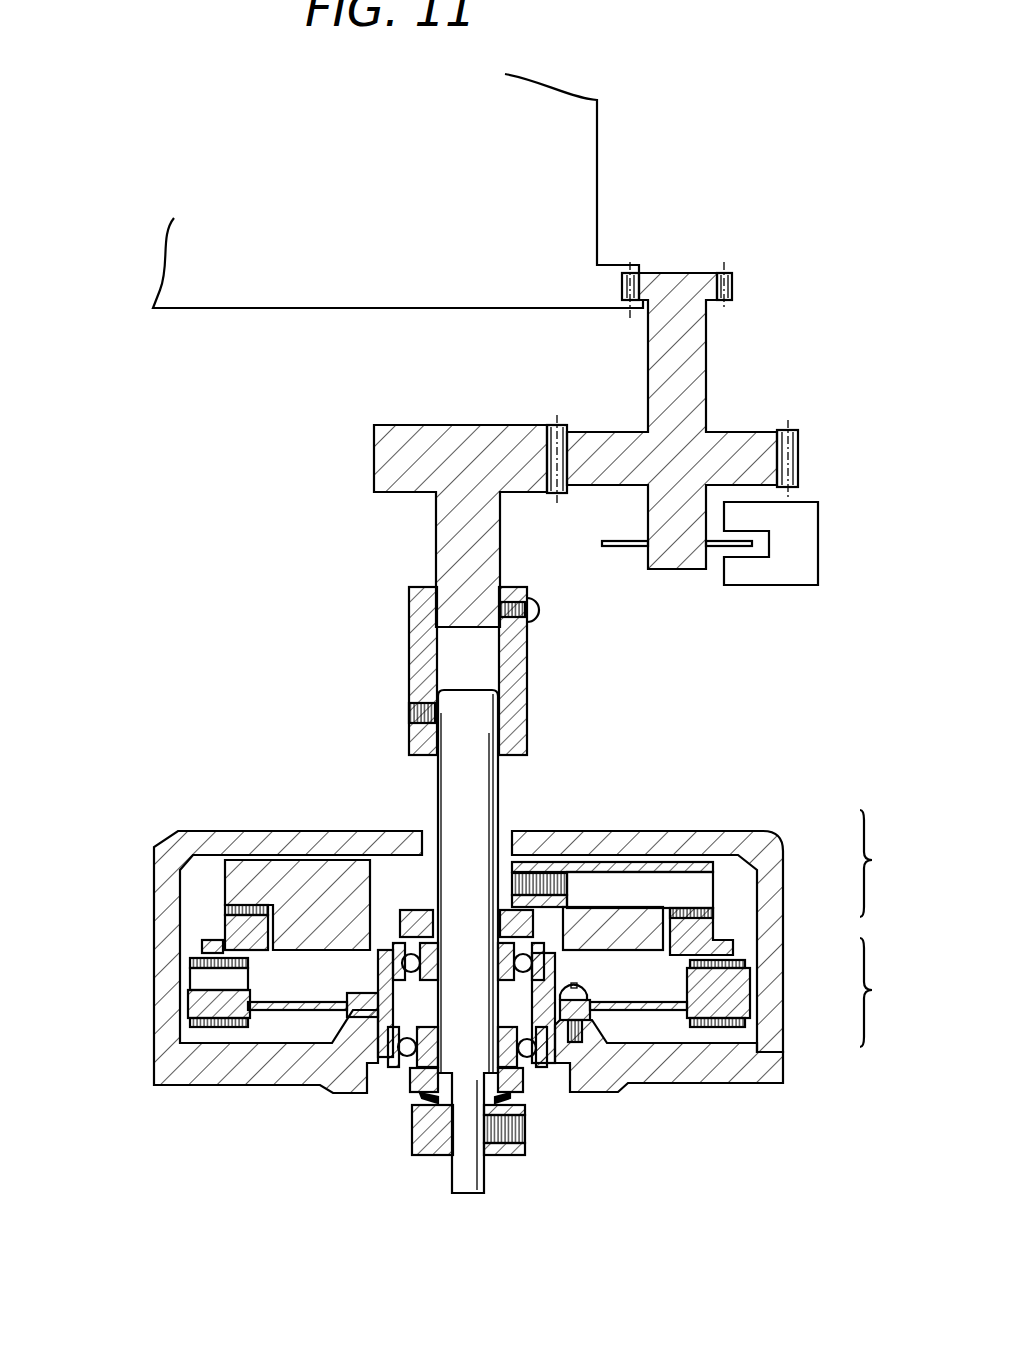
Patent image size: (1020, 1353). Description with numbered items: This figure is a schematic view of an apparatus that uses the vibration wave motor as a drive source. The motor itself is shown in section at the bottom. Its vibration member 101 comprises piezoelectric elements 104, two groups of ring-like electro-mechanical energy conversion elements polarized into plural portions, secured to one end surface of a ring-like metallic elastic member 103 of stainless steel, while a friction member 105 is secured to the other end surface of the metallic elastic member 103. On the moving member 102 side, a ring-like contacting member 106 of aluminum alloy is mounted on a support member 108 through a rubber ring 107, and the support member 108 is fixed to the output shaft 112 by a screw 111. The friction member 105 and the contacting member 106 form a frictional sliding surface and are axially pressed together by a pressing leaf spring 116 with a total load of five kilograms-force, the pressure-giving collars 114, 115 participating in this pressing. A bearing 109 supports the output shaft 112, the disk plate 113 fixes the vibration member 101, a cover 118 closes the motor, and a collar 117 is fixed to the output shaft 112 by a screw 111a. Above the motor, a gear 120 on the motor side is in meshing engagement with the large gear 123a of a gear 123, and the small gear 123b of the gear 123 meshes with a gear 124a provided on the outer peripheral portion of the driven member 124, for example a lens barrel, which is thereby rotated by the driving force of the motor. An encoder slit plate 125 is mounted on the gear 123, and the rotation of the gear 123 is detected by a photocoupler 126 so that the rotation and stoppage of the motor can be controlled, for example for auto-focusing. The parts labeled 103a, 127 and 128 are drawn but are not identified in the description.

The vibration member 101 is at (580, 992).
The moving member 102 is at (886, 863).
The metallic elastic member 103 is at (740, 992).
The stator coil portion 103a is at (193, 977).
The piezoelectric elements 104 is at (750, 1023).
The friction member 105 is at (745, 963).
The contacting member 106 is at (738, 947).
The rubber ring 107 is at (717, 912).
The support member 108 is at (700, 868).
The bearing 109 is at (393, 940).
The screw 111 is at (578, 872).
The screw 111a is at (512, 1157).
The output shaft 112 is at (488, 780).
The disk plate 113 is at (770, 1088).
The pressure-giving collar 114 is at (418, 912).
The pressure-giving collar 115 is at (525, 1080).
The pressing leaf spring 116 is at (515, 1093).
The collar 117 is at (425, 1157).
The cover 118 is at (710, 832).
The gear 120 is at (493, 430).
The gear 123 is at (707, 323).
The large gear 123a is at (802, 427).
The small gear 123b is at (733, 277).
The driven member 124 is at (590, 127).
The gear 124a is at (632, 273).
The encoder slit plate 125 is at (610, 548).
The photocoupler 126 is at (798, 582).
The left clamp sleeve 127 is at (410, 713).
The right clamp sleeve 128 is at (523, 655).